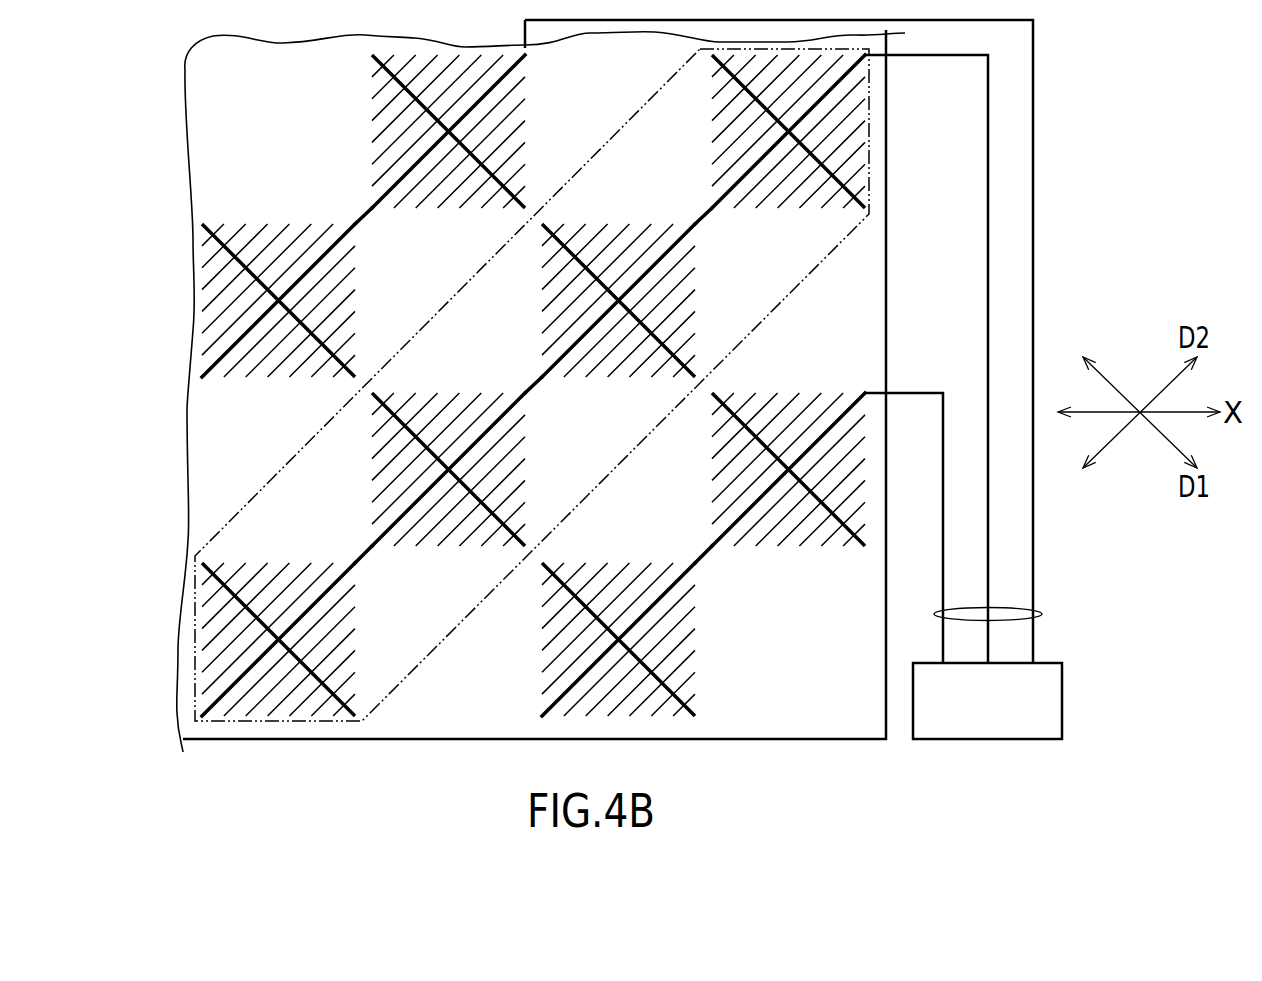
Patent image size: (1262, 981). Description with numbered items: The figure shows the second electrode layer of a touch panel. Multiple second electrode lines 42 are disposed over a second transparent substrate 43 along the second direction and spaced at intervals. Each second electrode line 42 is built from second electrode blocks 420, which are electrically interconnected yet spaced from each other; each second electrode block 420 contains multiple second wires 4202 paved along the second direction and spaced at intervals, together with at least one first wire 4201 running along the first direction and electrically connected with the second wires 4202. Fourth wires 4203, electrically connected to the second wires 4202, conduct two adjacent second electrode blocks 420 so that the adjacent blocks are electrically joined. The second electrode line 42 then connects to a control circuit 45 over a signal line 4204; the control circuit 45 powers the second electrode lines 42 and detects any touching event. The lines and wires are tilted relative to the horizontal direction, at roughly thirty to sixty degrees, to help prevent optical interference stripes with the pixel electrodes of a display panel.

The second electrode line 42 is at (850, 242).
The second electrode block 420 is at (867, 108).
The first wire 4201 is at (865, 175).
The second wire 4202 is at (720, 108).
The fourth wire 4203 is at (703, 207).
The signal line 4204 is at (1007, 608).
The second transparent substrate 43 is at (797, 727).
The control circuit 45 is at (1063, 703).